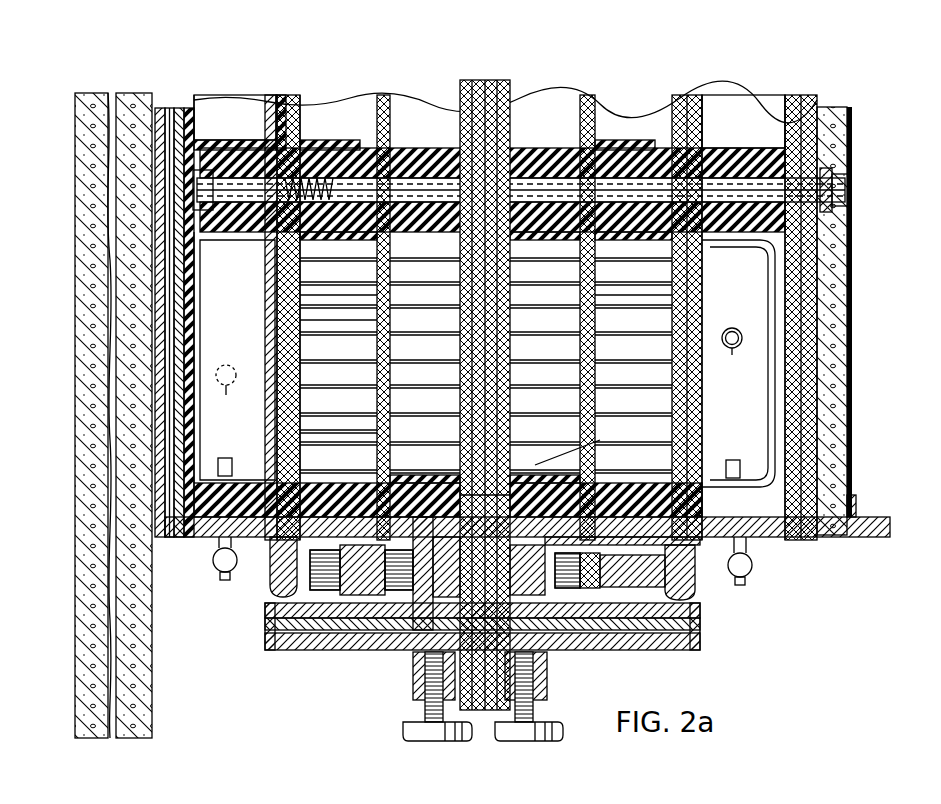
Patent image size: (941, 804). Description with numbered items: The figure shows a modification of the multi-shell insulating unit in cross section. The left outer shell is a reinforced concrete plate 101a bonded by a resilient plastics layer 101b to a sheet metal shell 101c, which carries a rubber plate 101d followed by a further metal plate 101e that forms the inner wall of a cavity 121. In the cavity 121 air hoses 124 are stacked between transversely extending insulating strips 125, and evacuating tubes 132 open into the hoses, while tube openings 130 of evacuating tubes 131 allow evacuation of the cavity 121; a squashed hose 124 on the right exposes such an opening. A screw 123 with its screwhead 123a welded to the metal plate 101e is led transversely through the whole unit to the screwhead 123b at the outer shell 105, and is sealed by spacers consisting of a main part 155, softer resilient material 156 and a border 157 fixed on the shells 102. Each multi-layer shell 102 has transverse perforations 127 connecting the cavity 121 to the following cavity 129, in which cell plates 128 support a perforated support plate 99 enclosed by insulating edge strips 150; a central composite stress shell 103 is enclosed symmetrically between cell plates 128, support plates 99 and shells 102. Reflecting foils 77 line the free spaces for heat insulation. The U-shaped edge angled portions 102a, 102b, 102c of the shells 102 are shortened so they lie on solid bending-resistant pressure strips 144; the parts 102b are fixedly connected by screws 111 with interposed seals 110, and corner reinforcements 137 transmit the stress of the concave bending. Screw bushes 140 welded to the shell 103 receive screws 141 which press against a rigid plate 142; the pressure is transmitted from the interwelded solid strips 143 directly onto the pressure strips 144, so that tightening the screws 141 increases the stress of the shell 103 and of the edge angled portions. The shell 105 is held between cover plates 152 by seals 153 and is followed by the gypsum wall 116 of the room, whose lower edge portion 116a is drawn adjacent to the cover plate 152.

The reinforced concrete plate 101a is at (138, 96).
The resilient plastics layer 101b is at (186, 478).
The sheet metal shell 101c is at (179, 400).
The rubber plate 101d is at (170, 340).
The metal plate 101e is at (160, 272).
The multi-layer shell 102 is at (268, 72).
The edge angled portion 102a is at (318, 522).
The edge angled portion 102b is at (520, 483).
The edge angled portion 102c is at (368, 630).
The central shell 103 is at (455, 70).
The outer shell 105 is at (820, 94).
The seal 110 is at (530, 590).
The screw 111 is at (600, 580).
The gypsum wall 116 is at (850, 440).
The liner foot 116a is at (856, 500).
The cavity 121 is at (232, 118).
The screw 123 is at (519, 190).
The screwhead 123a is at (238, 186).
The screwhead 123b is at (834, 180).
The air hose 124 is at (281, 120).
The insulating strip 125 is at (230, 222).
The transverse perforation 127 is at (377, 299).
The cell plate 128 is at (318, 354).
The cavity 129 is at (300, 323).
The tube opening 130 is at (478, 381).
The evacuating tube 131 is at (226, 365).
The evacuating tube 132 is at (226, 458).
The corner reinforcement 137 is at (380, 520).
The screw bush 140 is at (413, 695).
The screw 141 is at (555, 722).
The rigid plate 142 is at (590, 650).
The connecting piece 143 is at (275, 650).
The pressure strip 144 is at (270, 580).
The insulating edge strip 150 is at (415, 490).
The cover plate 152 is at (872, 537).
The seal 153 is at (160, 545).
The main part 155 is at (545, 247).
The resilient material 156 is at (337, 139).
The border 157 is at (322, 150).
The reflecting foil 77 is at (817, 107).
The support plate 99 is at (486, 307).